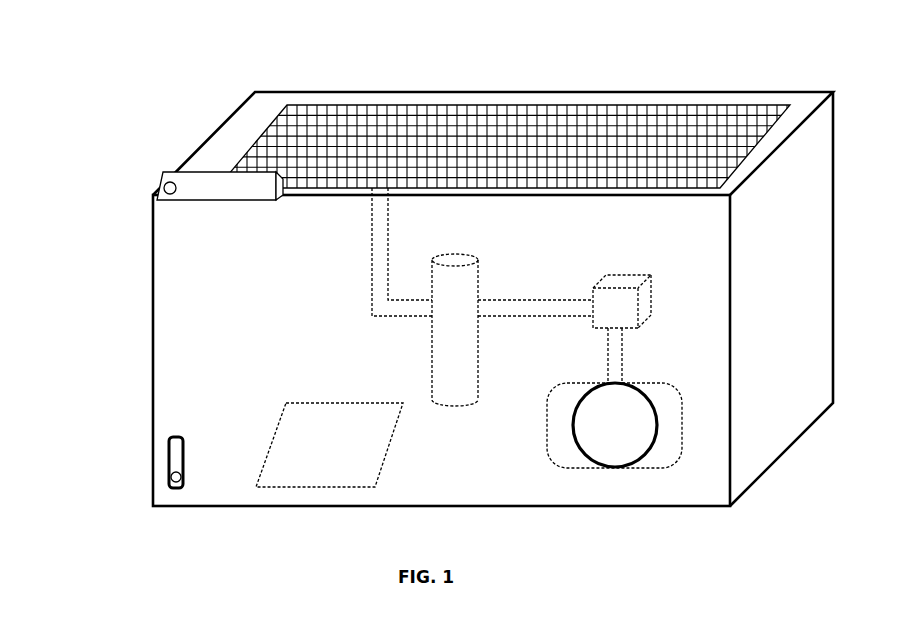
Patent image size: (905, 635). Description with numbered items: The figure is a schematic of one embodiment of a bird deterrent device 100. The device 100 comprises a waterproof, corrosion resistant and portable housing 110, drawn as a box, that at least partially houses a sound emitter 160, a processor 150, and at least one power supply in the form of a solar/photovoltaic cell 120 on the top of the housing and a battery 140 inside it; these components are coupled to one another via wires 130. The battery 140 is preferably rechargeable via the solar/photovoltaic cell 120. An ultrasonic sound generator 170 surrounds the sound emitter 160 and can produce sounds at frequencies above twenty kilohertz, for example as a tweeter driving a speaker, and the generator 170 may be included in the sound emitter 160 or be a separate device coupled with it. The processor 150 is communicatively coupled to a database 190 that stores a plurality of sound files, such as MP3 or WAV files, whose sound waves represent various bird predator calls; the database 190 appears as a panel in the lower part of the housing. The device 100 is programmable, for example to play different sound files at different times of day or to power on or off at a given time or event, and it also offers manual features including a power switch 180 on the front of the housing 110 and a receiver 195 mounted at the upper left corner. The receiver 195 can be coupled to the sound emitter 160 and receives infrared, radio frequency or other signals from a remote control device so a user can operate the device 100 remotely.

The bird deterrent device 100 is at (128, 82).
The housing 110 is at (153, 310).
The solar/photovoltaic cell 120 is at (393, 105).
The wires 130 is at (368, 285).
The battery 140 is at (432, 358).
The processor 150 is at (602, 280).
The sound emitter 160 is at (643, 393).
The ultrasonic sound generator 170 is at (548, 435).
The power switch 180 is at (170, 468).
The database 190 is at (282, 418).
The receiver 195 is at (158, 182).